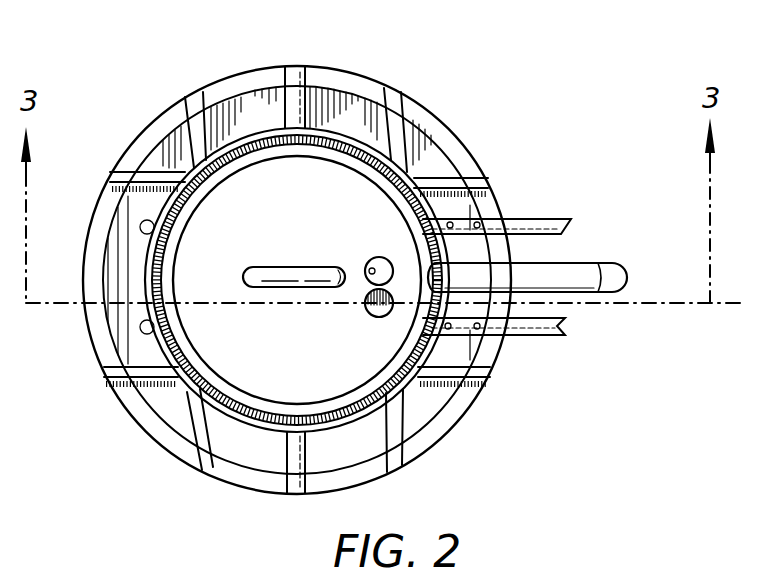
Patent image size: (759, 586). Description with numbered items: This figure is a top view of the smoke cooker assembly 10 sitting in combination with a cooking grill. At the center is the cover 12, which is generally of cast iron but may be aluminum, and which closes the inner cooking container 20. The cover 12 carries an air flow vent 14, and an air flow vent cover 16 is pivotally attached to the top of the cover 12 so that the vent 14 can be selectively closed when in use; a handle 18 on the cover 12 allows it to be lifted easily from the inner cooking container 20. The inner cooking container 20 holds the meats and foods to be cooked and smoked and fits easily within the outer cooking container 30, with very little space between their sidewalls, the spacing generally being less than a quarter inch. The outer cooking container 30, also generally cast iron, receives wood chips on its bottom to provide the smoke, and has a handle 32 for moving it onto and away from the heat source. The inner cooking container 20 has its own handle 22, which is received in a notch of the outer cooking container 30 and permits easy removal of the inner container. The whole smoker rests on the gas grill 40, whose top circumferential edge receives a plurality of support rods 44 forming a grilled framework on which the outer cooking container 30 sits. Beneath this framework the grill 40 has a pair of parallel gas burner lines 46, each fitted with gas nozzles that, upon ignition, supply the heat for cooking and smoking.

The smoke cooker assembly 10 is at (124, 87).
The cover 12 is at (313, 200).
The air flow vent 14 is at (378, 318).
The air flow vent cover 16 is at (377, 259).
The handle 18 is at (274, 288).
The inner cooking container 20 is at (413, 213).
The handle 22 is at (518, 273).
The outer cooking container 30 is at (331, 130).
The handle 32 is at (622, 262).
The gas grill 40 is at (474, 403).
The support rods 44 is at (144, 391).
The gas burner lines 46 is at (571, 224).